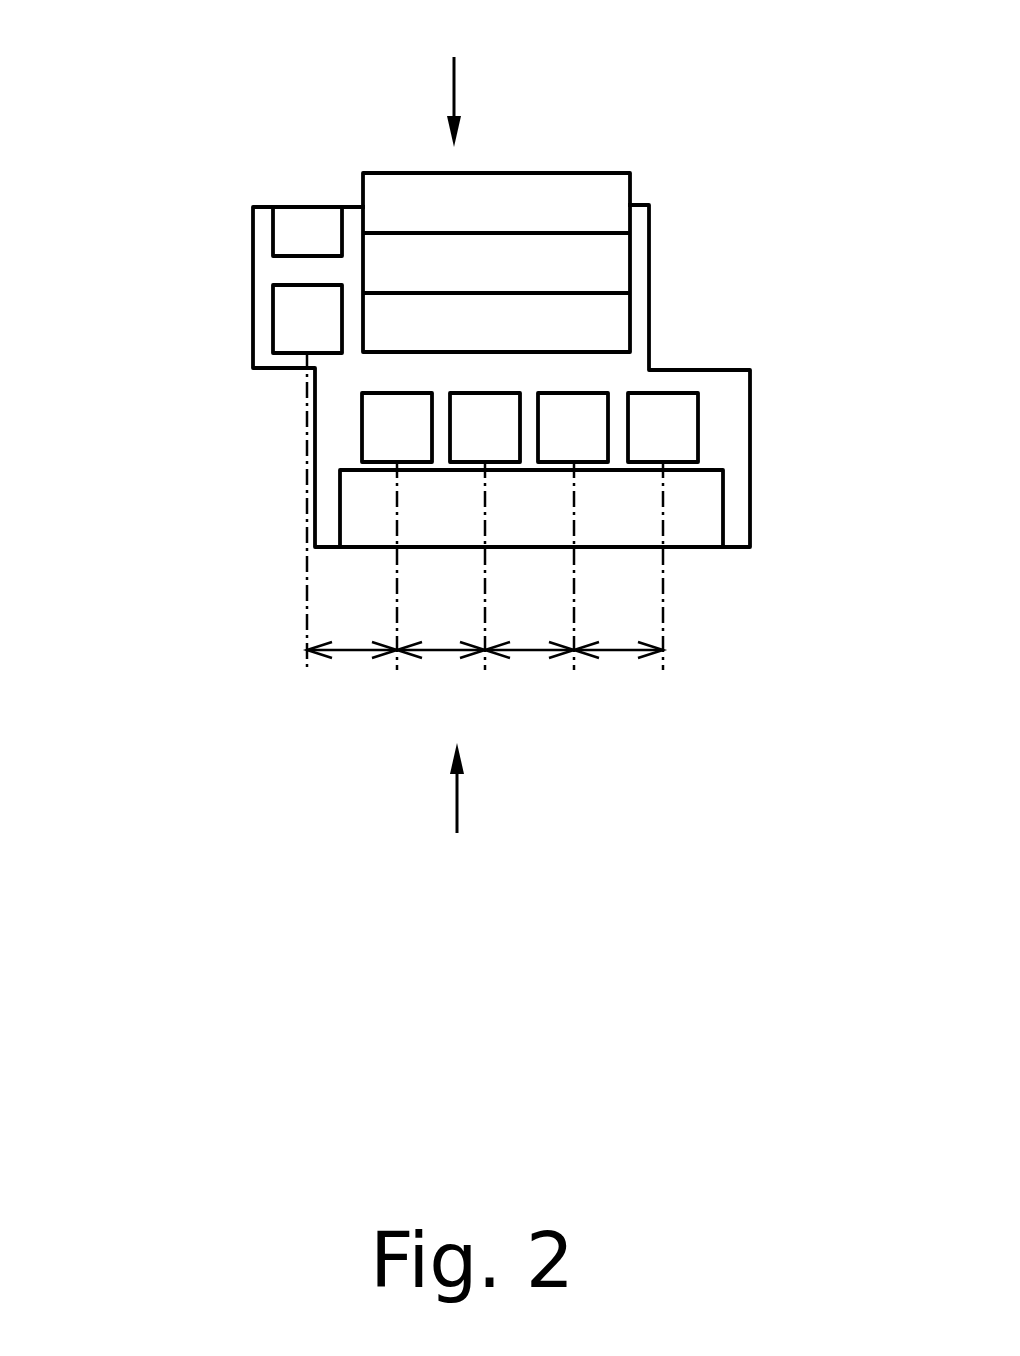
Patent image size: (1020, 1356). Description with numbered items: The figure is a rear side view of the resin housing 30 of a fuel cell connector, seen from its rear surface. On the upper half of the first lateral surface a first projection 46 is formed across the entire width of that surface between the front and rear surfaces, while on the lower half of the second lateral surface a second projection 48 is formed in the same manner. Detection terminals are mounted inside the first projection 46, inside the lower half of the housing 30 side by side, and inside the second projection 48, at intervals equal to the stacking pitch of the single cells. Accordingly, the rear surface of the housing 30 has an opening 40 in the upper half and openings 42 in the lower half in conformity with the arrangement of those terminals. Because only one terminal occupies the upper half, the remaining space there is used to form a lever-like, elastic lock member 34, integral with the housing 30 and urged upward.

The housing 30 is at (479, 539).
The lock member 34 is at (564, 173).
The opening 40 is at (285, 316).
The openings 42 is at (413, 455).
The first projection 46 is at (253, 246).
The second projection 48 is at (737, 447).